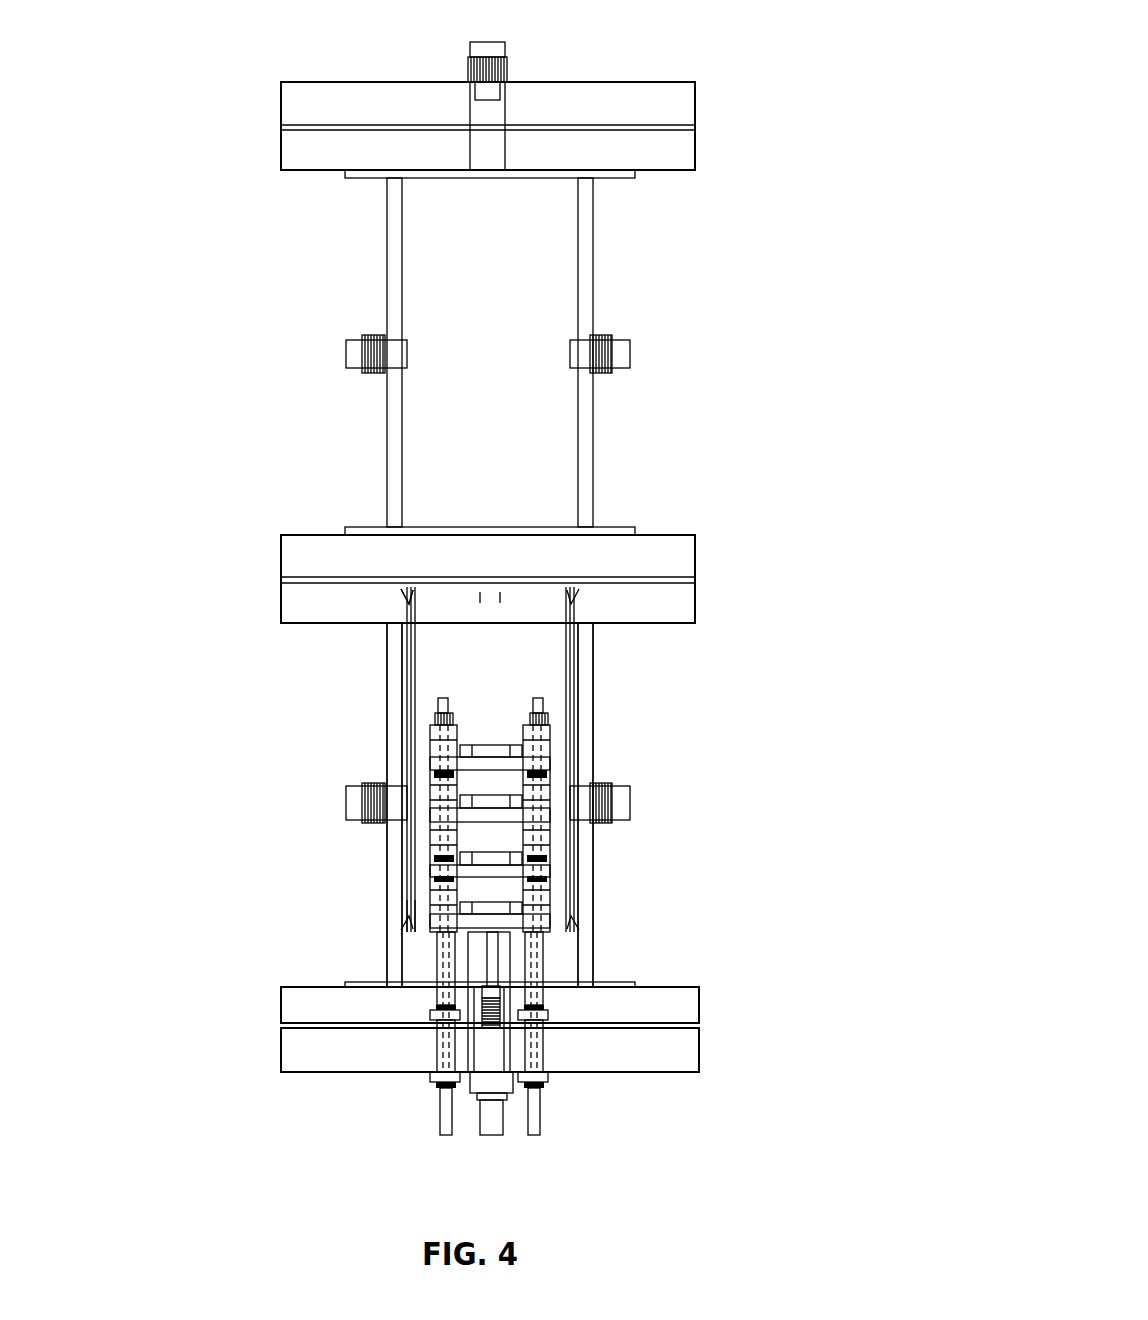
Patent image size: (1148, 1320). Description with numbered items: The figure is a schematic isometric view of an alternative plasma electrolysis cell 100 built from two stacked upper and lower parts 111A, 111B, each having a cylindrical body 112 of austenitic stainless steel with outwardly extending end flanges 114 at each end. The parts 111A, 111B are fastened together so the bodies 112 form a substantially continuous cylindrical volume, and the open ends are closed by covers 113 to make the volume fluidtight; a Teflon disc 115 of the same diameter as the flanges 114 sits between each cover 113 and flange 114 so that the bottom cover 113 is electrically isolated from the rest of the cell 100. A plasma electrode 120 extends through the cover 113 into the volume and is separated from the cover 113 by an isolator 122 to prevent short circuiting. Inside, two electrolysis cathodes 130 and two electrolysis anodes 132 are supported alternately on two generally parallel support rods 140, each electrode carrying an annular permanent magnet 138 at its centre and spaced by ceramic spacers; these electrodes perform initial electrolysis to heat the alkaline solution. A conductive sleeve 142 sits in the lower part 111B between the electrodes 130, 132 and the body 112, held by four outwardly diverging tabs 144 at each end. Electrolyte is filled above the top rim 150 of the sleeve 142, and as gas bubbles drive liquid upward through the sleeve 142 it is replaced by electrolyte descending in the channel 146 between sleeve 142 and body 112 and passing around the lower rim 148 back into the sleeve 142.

The cell 100 is at (663, 440).
The upper part 111A is at (593, 213).
The lower part 111B is at (387, 643).
The cylindrical body 112 is at (393, 713).
The cover 113 is at (672, 92).
The end flange 114 is at (300, 597).
The disc 115 is at (695, 126).
The plasma electrode 120 is at (493, 965).
The isolator 122 is at (470, 952).
The electrolysis cathode 130 is at (548, 815).
The electrolysis anode 132 is at (430, 770).
The permanent magnet 138 is at (513, 744).
The support rod 140 is at (442, 705).
The conductive sleeve 142 is at (574, 645).
The tab 144 is at (578, 591).
The channel 146 is at (585, 763).
The lower rim 148 is at (411, 928).
The top rim 150 is at (405, 588).